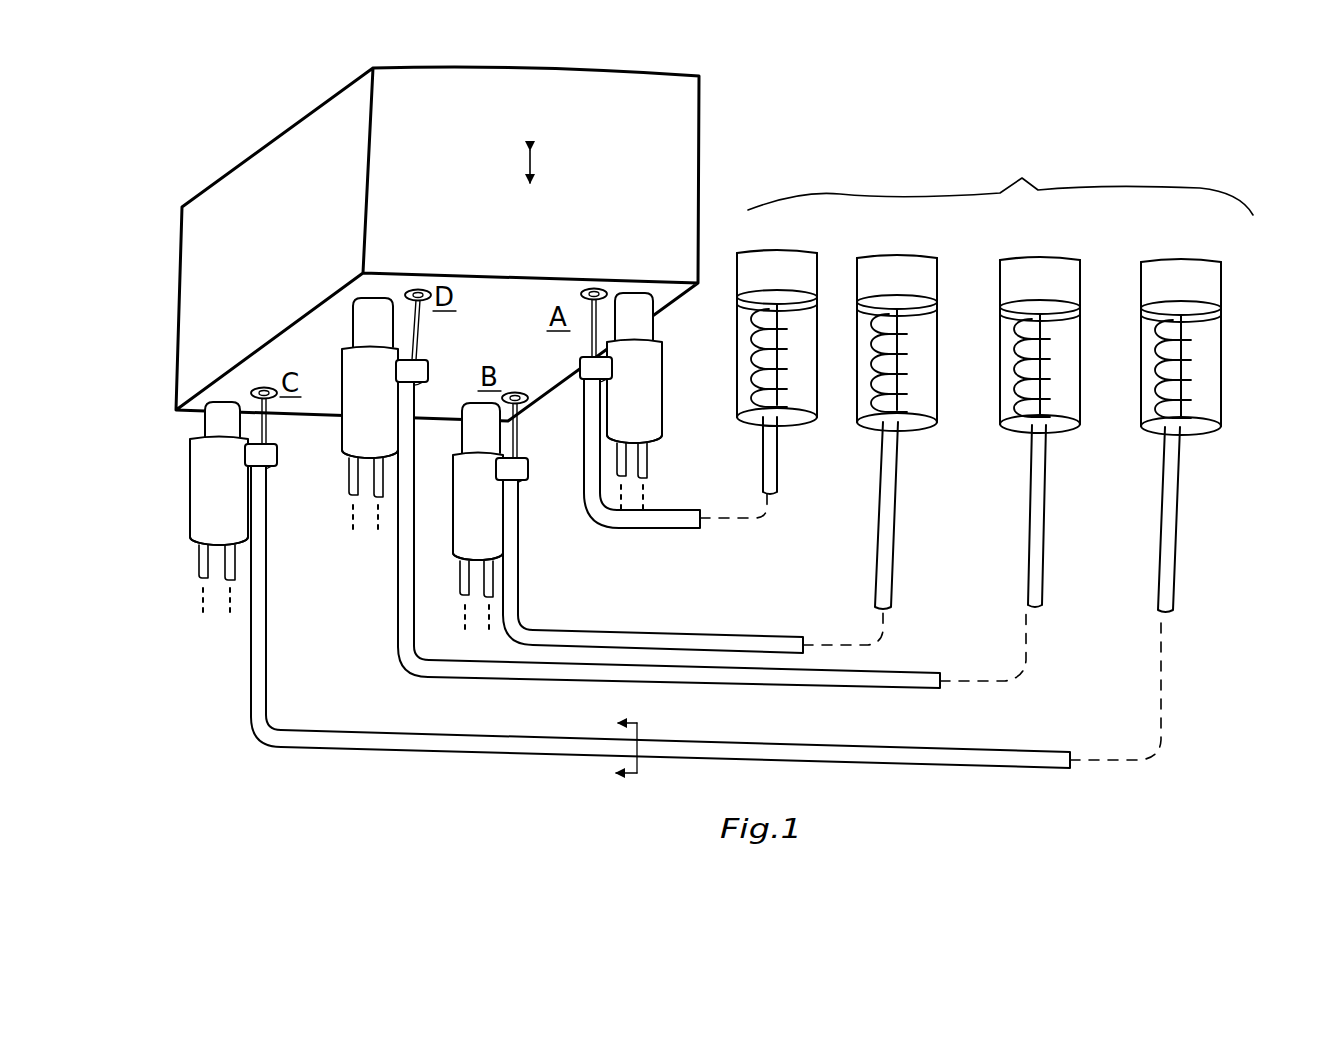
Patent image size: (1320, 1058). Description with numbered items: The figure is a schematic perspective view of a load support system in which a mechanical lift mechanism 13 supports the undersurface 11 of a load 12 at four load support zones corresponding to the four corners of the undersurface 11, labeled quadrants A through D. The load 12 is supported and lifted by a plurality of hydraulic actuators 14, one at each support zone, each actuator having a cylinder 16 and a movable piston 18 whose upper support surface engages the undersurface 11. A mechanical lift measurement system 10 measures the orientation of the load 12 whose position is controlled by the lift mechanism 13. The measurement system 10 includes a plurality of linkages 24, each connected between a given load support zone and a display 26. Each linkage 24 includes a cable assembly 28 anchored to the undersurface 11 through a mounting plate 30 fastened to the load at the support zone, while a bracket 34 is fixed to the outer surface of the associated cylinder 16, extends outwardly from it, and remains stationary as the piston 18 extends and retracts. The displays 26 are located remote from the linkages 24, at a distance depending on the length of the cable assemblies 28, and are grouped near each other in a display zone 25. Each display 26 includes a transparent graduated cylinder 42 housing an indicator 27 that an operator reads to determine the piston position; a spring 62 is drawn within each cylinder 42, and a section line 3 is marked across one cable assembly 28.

The mechanical lift measurement system 10 is at (903, 165).
The undersurface 11 is at (492, 342).
The load 12 is at (712, 125).
The mechanical lift mechanism 13 is at (200, 600).
The hydraulic actuator 14 is at (428, 480).
The cylinder 16 is at (190, 470).
The movable piston 18 is at (206, 421).
The linkage 24 is at (265, 386).
The display zone 25 is at (1000, 178).
The display 26 is at (1003, 406).
The indicator 27 is at (755, 292).
The cable assembly 28 is at (612, 530).
The mounting plate 30 is at (254, 392).
The bracket 34 is at (275, 452).
The transparent graduated cylinder 42 is at (818, 395).
The spring 62 is at (784, 341).
The section line 3- 3 is at (616, 747).